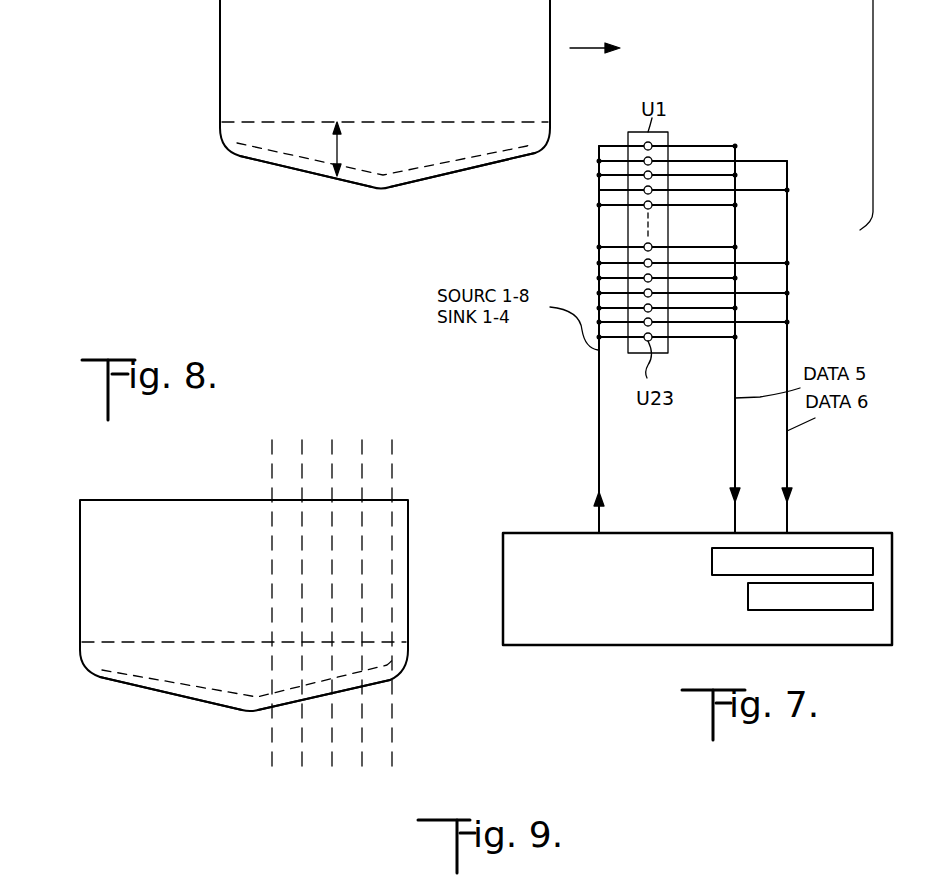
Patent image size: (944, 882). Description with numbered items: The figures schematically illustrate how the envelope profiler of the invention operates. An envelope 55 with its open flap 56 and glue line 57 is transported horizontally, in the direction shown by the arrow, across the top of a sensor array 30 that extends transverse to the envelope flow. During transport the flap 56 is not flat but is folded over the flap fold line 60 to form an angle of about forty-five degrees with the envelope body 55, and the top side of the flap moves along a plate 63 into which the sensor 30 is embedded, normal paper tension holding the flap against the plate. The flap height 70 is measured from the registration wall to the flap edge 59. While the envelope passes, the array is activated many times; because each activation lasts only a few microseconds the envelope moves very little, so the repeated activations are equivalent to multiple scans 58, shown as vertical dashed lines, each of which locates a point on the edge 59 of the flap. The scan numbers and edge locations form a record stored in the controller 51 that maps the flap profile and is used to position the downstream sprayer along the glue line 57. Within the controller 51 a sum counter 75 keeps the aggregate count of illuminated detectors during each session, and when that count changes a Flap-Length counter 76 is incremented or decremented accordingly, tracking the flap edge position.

In FIG. 7, the sensor array 30 is at (652, 247).
In FIG. 7, the controller 51 is at (830, 637).
In FIG. 8, the envelope 55 is at (230, 42).
In FIG. 9, the envelope 55 is at (157, 518).
In FIG. 8, the flap 56 is at (265, 135).
In FIG. 9, the flap 56 is at (160, 665).
In FIG. 8, the glue line 57 is at (450, 170).
In FIG. 9, the glue line 57 is at (340, 685).
In FIG. 9, the scans 58 is at (392, 442).
In FIG. 8, the flap edge 59 is at (298, 170).
In FIG. 9, the flap edge 59 is at (223, 707).
In FIG. 8, the flap fold line 60 is at (247, 120).
In FIG. 9, the flap fold line 60 is at (90, 640).
In FIG. 7, the plate 63 is at (668, 131).
In FIG. 8, the flap height 70 is at (343, 147).
In FIG. 7, the sum counter 75 is at (868, 548).
In FIG. 7, the Flap-Length counter 76 is at (868, 610).